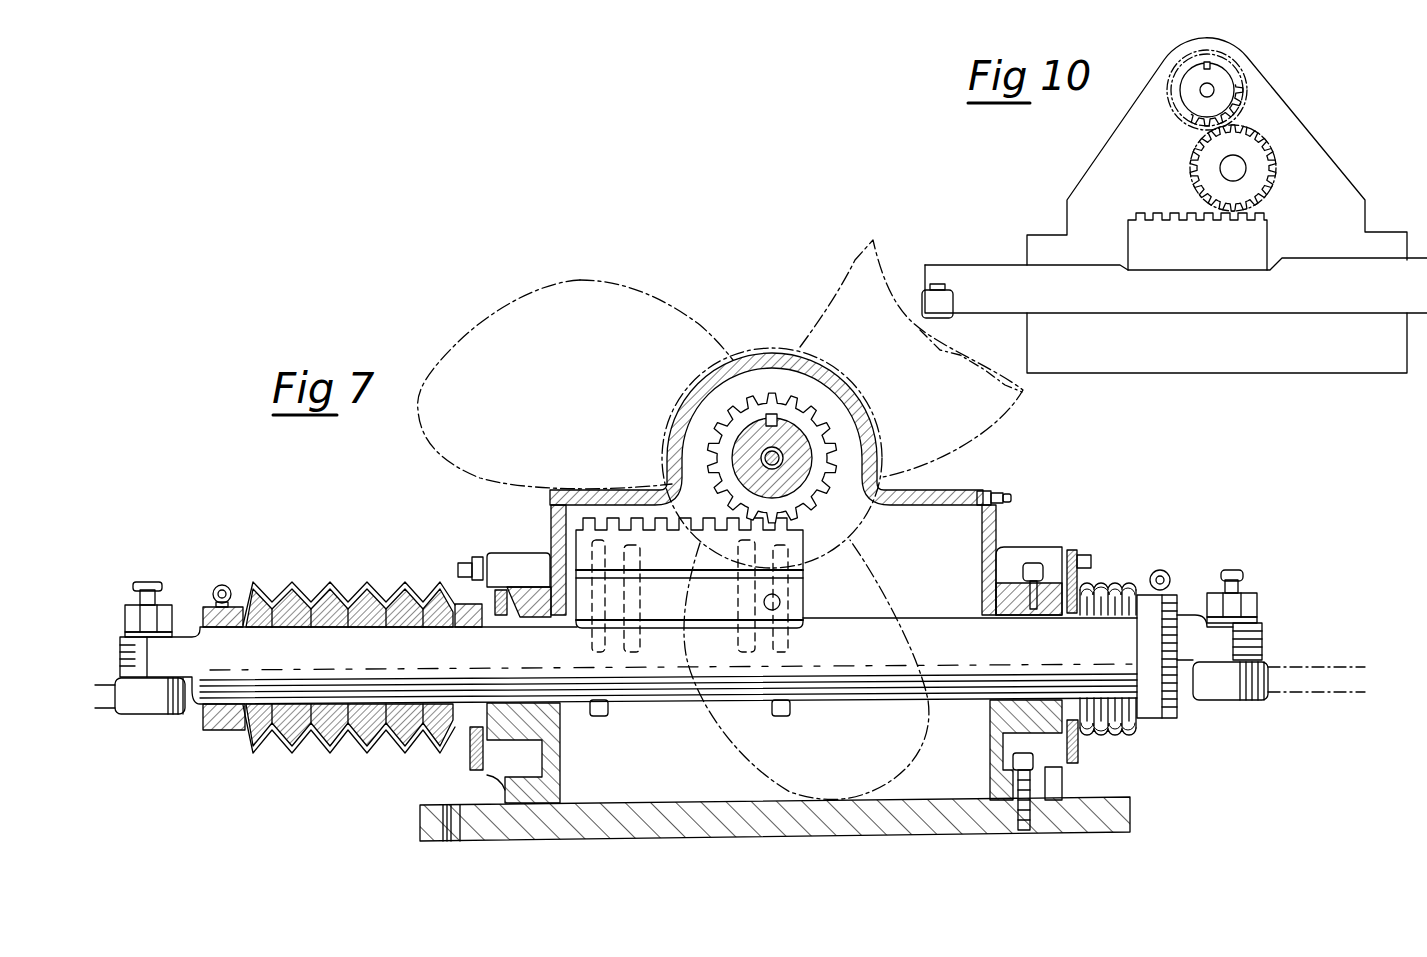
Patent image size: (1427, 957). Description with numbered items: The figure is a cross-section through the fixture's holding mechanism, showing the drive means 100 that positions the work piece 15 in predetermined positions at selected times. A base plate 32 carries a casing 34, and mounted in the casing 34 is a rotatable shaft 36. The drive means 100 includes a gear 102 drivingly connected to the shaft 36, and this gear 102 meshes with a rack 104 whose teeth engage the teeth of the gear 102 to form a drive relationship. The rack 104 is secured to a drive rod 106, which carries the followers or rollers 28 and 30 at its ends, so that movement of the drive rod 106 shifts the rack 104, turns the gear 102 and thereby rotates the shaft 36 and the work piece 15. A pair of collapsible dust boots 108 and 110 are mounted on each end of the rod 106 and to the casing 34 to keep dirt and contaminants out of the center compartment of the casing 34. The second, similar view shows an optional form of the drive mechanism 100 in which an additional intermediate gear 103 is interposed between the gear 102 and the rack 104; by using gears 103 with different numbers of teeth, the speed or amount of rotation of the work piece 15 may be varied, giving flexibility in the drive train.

In FIG. 7, the work piece 15 is at (603, 283).
In FIG. 7, the follower or roller 28 is at (140, 708).
In FIG. 7, the follower or roller 30 is at (1228, 697).
In FIG. 7, the base plate 32 is at (922, 830).
In FIG. 7, the casing 34 is at (990, 520).
In FIG. 10, the casing 34 is at (1358, 208).
In FIG. 10, the rotatable shaft 36 is at (1190, 80).
In FIG. 10, the drive means 100 is at (1275, 126).
In FIG. 7, the gear 102 is at (750, 405).
In FIG. 10, the gear 102 is at (1243, 100).
In FIG. 10, the intermediate gear 103 is at (1250, 135).
In FIG. 7, the rack 104 is at (587, 538).
In FIG. 10, the rack 104 is at (1130, 230).
In FIG. 7, the drive rod 106 is at (384, 663).
In FIG. 10, the drive rod 106 is at (1010, 277).
In FIG. 7, the collapsible dust boot 108 is at (295, 583).
In FIG. 7, the collapsible dust boot 110 is at (1115, 568).